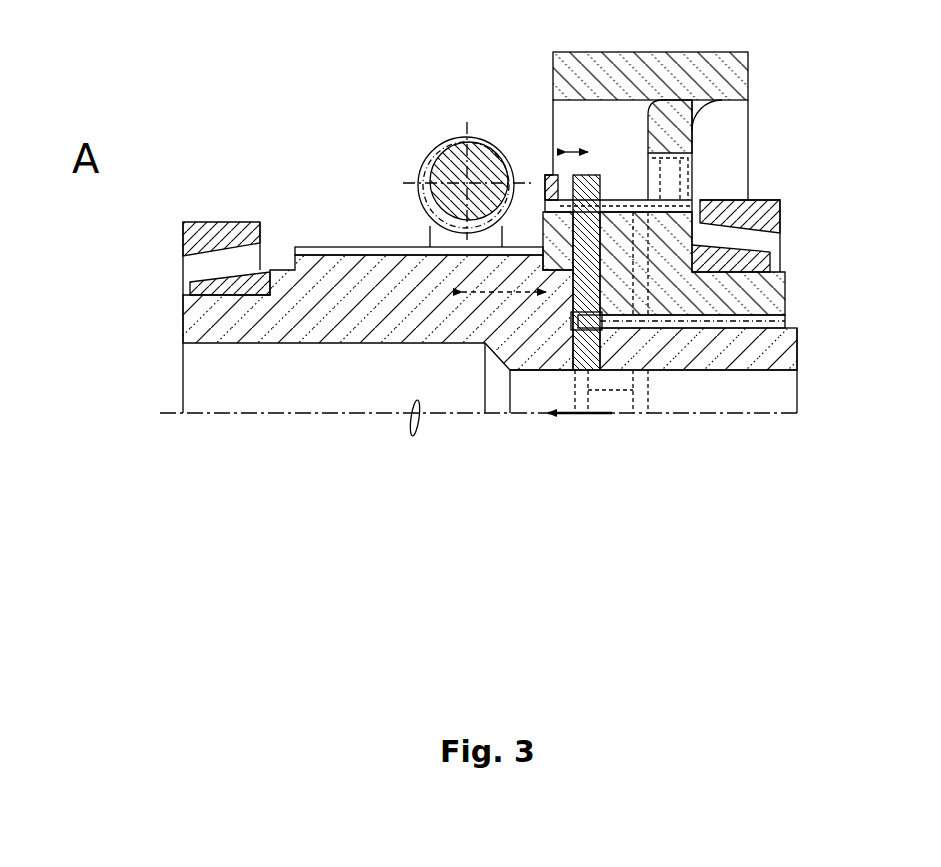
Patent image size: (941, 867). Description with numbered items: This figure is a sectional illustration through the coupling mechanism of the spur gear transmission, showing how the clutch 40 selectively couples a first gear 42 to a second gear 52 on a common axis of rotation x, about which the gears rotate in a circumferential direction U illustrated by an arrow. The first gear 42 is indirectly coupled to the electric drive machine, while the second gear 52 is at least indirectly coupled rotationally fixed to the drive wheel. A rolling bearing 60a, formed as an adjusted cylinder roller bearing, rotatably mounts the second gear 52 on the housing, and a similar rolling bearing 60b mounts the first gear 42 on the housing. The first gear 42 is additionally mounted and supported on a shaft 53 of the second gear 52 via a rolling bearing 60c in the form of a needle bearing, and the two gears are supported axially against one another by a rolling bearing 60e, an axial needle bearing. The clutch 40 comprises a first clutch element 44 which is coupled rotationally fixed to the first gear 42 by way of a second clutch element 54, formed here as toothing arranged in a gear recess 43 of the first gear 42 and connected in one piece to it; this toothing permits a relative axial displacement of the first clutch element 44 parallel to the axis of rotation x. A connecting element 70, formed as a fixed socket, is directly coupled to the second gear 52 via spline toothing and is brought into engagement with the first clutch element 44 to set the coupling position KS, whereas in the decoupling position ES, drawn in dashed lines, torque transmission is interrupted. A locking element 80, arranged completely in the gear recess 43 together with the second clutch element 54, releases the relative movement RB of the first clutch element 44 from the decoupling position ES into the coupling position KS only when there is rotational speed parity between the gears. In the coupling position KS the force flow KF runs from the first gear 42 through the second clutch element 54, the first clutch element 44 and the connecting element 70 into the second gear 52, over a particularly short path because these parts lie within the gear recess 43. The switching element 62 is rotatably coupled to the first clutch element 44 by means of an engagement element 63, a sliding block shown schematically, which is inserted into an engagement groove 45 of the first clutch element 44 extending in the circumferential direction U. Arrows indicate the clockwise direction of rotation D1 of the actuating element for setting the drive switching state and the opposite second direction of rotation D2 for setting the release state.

The clutch 40 is at (552, 292).
The first gear 42 is at (553, 75).
The gear recess 43 is at (558, 117).
The first clutch element 44 is at (652, 172).
The engagement groove 45 is at (688, 96).
The second gear 52 is at (315, 247).
The shaft 53 is at (590, 222).
The second clutch element 54 is at (748, 201).
The rolling bearing 60a is at (183, 250).
The rolling bearing 60b is at (782, 234).
The rolling bearing 60c is at (785, 322).
The rolling bearing 60e is at (602, 312).
The switching element 62 is at (426, 160).
The engagement element 63 is at (605, 392).
The connecting element 70 is at (607, 264).
The locking element 80 is at (593, 226).
The direction of rotation D1 is at (498, 172).
The second direction of rotation D2 is at (498, 194).
The coupling position KS is at (545, 170).
The relative movement RB is at (580, 150).
The decoupling position ES is at (595, 168).
The force flow KF is at (690, 97).
The axis of rotation x is at (386, 413).
The circumferential direction U is at (410, 432).